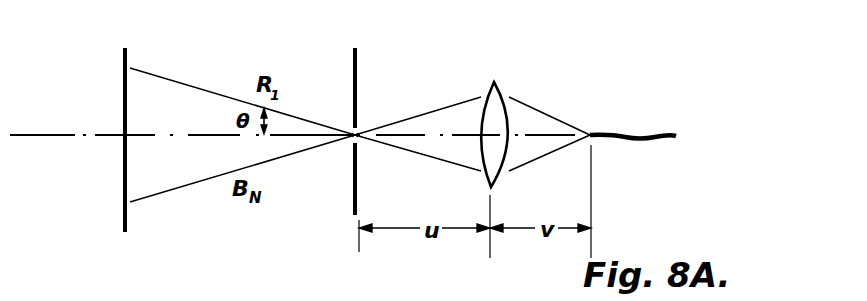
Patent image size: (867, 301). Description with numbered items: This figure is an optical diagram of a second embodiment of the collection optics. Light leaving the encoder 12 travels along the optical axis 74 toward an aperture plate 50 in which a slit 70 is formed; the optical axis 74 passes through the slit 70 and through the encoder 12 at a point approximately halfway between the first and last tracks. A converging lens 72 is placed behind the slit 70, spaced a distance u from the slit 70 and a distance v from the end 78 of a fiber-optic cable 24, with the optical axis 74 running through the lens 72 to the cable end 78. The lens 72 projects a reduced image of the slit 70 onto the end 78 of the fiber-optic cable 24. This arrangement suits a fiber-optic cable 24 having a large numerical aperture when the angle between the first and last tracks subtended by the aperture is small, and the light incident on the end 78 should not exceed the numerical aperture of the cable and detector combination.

The encoder 12 is at (118, 56).
The optical axis 74 is at (62, 133).
The aperture plate 50 is at (352, 60).
The slit 70 is at (359, 131).
The converging lens 72 is at (500, 97).
The end of fiber-optic cable 78 is at (592, 132).
The fiber-optic cable 24 is at (660, 133).